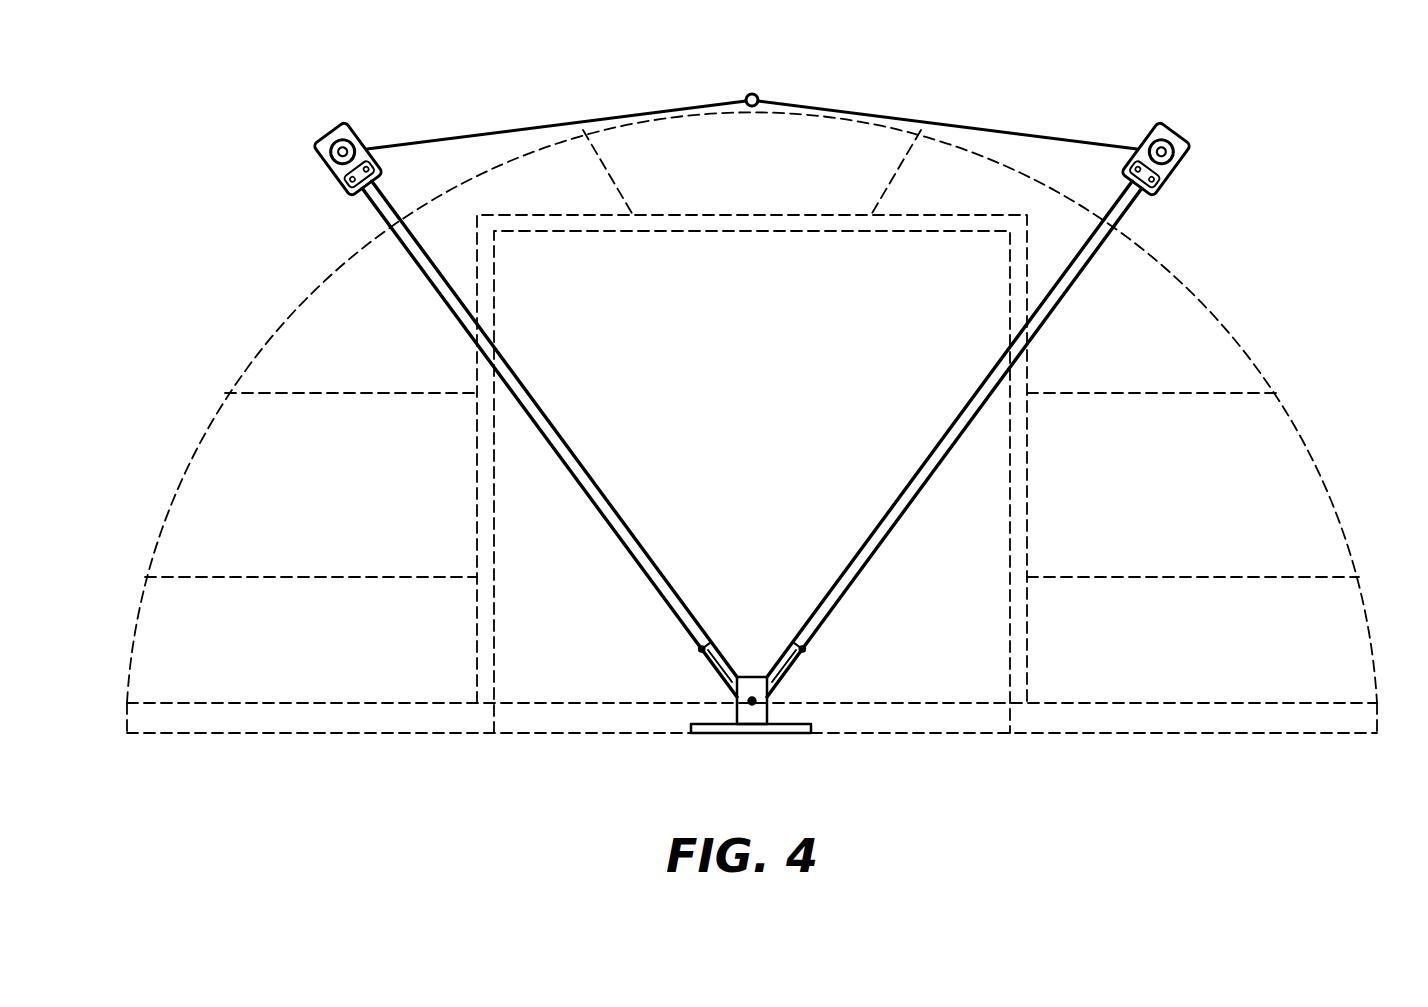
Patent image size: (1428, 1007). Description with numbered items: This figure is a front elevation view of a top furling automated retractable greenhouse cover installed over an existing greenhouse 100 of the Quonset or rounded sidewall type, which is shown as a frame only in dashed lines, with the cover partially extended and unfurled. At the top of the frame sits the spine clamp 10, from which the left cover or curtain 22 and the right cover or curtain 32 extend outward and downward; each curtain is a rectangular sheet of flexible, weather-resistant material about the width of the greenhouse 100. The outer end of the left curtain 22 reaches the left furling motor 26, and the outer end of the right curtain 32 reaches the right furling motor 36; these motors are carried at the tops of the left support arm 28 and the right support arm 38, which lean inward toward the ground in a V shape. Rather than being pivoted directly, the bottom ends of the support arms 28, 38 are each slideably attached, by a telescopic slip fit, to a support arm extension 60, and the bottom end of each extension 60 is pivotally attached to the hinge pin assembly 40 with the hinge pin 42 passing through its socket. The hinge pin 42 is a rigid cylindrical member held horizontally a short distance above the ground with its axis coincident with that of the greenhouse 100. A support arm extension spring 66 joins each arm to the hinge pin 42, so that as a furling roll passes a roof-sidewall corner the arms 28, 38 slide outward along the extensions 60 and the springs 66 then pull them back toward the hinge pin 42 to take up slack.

The spine clamp 10 is at (753, 93).
The left cover or curtain 22 is at (560, 123).
The right cover or curtain 32 is at (947, 123).
The left furling motor 26 is at (313, 148).
The right furling motor 36 is at (1192, 148).
The left support arm 28 is at (555, 427).
The right support arm 38 is at (948, 427).
The hinge pin assembly 40 is at (705, 729).
The hinge pin 42 is at (753, 708).
The support arm extension 60 is at (730, 648).
The support arm extension spring 66 is at (717, 672).
The greenhouse 100 is at (1250, 357).